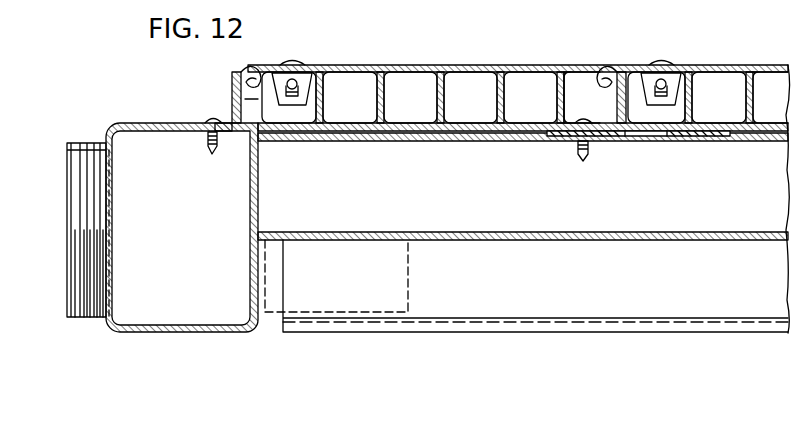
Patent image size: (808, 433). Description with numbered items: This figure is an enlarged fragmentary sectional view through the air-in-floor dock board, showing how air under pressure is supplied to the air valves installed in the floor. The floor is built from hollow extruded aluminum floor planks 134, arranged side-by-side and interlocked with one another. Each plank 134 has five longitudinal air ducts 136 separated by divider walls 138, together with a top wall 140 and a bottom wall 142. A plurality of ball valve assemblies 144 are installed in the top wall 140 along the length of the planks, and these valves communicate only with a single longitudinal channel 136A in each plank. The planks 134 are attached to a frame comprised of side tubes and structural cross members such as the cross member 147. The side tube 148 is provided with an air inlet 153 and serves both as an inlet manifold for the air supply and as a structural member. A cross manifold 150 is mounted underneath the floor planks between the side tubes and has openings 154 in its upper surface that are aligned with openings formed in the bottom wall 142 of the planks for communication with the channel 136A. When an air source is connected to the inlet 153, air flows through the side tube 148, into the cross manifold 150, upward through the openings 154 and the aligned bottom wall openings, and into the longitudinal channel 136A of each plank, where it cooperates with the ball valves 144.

The floor plank 134 is at (477, 63).
The longitudinal air duct 136 is at (453, 83).
The longitudinal channel 136A is at (233, 96).
The divider wall 138 is at (437, 110).
The top wall 140 is at (530, 66).
The bottom wall 142 is at (522, 131).
The ball valve assembly 144 is at (292, 62).
The structural cross member 147 is at (437, 334).
The side tube 148 is at (146, 127).
The cross manifold 150 is at (440, 242).
The air inlet 153 is at (80, 143).
The opening 154 is at (653, 136).